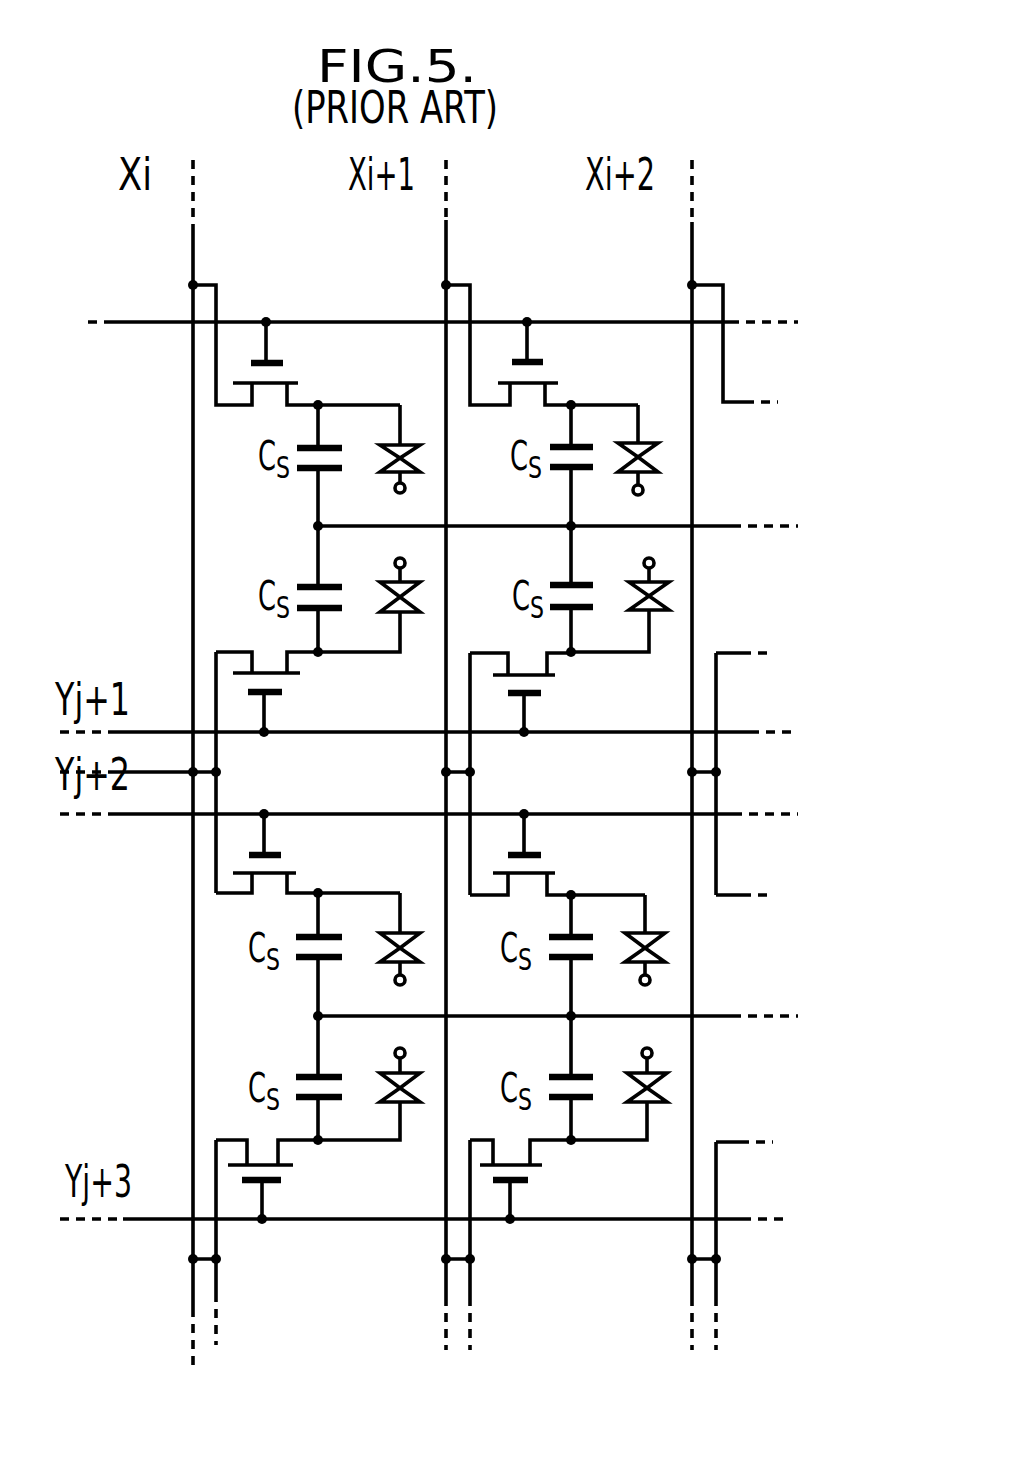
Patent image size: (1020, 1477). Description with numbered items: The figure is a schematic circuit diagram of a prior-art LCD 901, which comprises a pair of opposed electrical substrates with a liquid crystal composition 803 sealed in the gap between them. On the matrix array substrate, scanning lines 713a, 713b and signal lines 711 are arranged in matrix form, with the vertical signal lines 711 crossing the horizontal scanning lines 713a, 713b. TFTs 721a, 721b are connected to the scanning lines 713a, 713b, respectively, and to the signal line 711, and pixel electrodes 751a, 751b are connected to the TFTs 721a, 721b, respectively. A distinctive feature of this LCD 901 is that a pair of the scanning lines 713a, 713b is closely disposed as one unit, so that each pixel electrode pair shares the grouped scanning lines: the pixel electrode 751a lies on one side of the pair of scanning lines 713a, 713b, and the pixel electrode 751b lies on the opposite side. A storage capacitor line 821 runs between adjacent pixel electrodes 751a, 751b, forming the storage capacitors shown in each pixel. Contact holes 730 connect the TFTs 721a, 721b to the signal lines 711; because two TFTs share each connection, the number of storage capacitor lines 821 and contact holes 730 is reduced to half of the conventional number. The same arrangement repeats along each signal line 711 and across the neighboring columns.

The signal line 711 is at (193, 250).
The scanning line 713a is at (742, 732).
The scanning line 713b is at (733, 814).
The TFT 721a is at (233, 673).
The TFT 721b is at (293, 381).
The contact hole 730 is at (230, 772).
The pixel electrode 751a is at (413, 614).
The pixel electrode 751b is at (418, 443).
The liquid crystal composition 803 is at (660, 458).
The storage capacitor line 821 is at (752, 527).
The LCD 901 is at (675, 120).